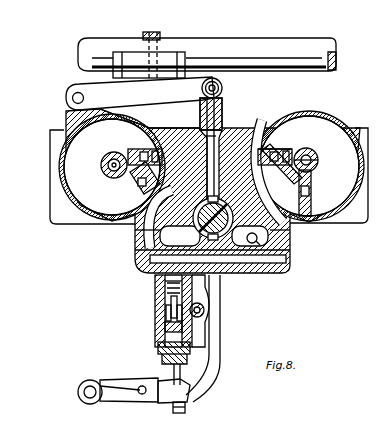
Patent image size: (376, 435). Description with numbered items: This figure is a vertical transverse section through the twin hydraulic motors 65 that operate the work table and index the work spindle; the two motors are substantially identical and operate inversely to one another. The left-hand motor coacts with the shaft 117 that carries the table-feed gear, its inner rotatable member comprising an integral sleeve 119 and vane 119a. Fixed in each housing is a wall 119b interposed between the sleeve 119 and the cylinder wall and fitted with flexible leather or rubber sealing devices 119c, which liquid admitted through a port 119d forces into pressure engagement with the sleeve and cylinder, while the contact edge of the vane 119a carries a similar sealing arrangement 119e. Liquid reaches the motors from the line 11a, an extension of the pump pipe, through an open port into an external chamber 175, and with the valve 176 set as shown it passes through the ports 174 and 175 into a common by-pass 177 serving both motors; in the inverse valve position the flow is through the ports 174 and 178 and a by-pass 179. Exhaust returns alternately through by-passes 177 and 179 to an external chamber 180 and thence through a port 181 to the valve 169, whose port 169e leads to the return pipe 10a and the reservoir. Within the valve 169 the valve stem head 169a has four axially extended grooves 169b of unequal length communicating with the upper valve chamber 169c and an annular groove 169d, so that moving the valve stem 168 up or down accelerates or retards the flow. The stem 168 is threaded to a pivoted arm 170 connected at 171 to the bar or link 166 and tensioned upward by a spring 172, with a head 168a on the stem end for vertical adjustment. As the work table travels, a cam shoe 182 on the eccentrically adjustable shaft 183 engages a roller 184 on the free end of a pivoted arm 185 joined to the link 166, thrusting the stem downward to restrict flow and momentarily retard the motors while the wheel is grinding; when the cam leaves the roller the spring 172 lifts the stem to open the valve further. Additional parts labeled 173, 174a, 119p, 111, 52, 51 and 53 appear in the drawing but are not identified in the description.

The eccentrically adjustable shaft 183 is at (258, 50).
The cam shoe 182 is at (168, 62).
The pivoted arm 185 is at (140, 93).
The roller 184 is at (228, 84).
The twin hydraulic motors 65 is at (68, 133).
The valve 176 is at (251, 137).
The port 178 is at (216, 134).
The by-pass 179 is at (192, 132).
The housing wall 173 is at (219, 128).
The external chamber 180 is at (216, 184).
The pipe extension 11a is at (262, 246).
The port 181 is at (150, 268).
The housing partition 174a is at (137, 233).
The port 174 is at (287, 236).
The common by-pass 177 is at (150, 250).
The shaft 117 is at (108, 168).
The sleeve 119 is at (116, 152).
The flexible sealing devices 119c is at (147, 155).
The wall 119b is at (271, 143).
The bearing element 119' 119p is at (316, 158).
The vane 119a is at (140, 200).
The sealing arrangement 119e is at (148, 202).
The port 119d is at (273, 185).
The external chamber 175 is at (233, 279).
The valve stem head 169a is at (221, 293).
The upper valve chamber 169c is at (157, 281).
The axially extended grooves 169b is at (167, 299).
The return pipe 10a is at (208, 307).
The port 169e is at (207, 318).
The valve 169 is at (207, 337).
The annular groove 169d is at (160, 327).
The valve stem 168 is at (155, 337).
The bar (link) 166 is at (213, 367).
The lever hub 111 is at (180, 393).
The head 168a is at (188, 411).
The pivoted arm 170 is at (120, 400).
The pivotal connection 171 is at (78, 390).
The spring 172 is at (138, 383).
The rail 52 is at (212, 429).
The rail 51 is at (195, 430).
The rail 53 is at (231, 430).